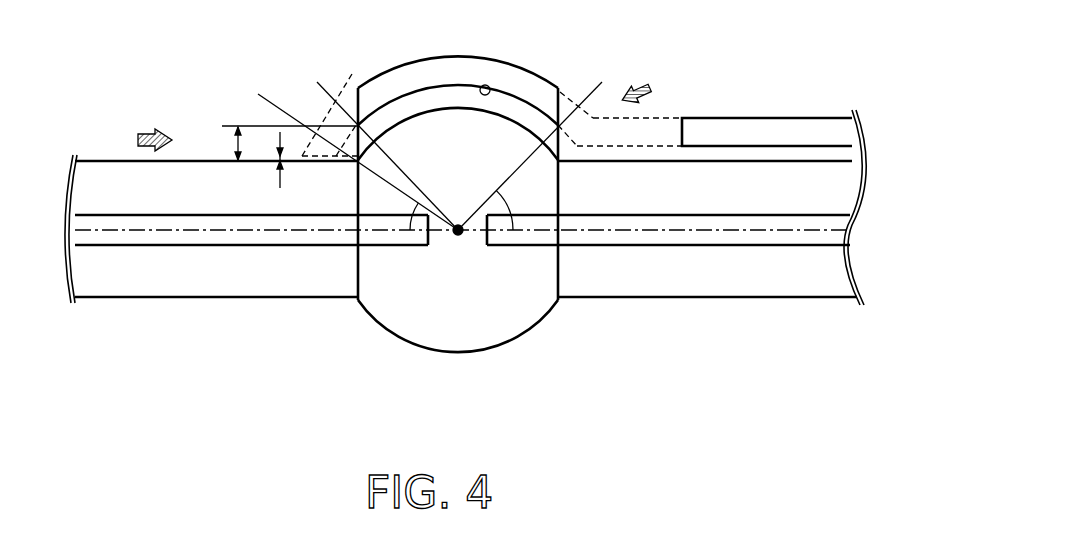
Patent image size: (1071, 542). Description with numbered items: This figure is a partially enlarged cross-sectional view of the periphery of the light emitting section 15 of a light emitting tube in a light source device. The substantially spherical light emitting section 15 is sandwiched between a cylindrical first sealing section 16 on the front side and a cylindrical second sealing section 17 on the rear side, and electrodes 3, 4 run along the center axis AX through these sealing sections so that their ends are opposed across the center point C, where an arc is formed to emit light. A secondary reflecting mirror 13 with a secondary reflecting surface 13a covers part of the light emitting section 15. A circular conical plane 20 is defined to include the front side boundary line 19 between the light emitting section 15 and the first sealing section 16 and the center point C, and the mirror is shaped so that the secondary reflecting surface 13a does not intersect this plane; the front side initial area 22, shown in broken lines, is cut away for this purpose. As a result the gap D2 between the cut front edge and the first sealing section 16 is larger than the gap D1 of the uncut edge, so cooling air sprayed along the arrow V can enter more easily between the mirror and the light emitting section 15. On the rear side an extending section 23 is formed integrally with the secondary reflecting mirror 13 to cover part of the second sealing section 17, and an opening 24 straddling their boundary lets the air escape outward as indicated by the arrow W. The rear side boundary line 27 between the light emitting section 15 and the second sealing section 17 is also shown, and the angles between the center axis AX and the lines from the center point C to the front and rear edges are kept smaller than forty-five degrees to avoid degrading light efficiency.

The electrode 3 is at (120, 215).
The electrode 4 is at (760, 247).
The secondary reflecting mirror 13 is at (423, 58).
The secondary reflecting surface 13a is at (488, 85).
The light emitting section 15 is at (392, 315).
The first sealing section 16 is at (243, 290).
The second sealing section 17 is at (688, 288).
The front side boundary line 19 is at (357, 301).
The circular conical plane 20 is at (277, 107).
The front side initial area 22 is at (352, 74).
The extending section 23 is at (802, 118).
The opening 24 is at (559, 100).
The rear side boundary line 27 is at (558, 276).
The center axis AX is at (638, 232).
The center point C is at (460, 237).
The arrow V is at (148, 130).
The arrow W is at (638, 77).
The gap D1 is at (274, 157).
The gap D2 is at (236, 145).